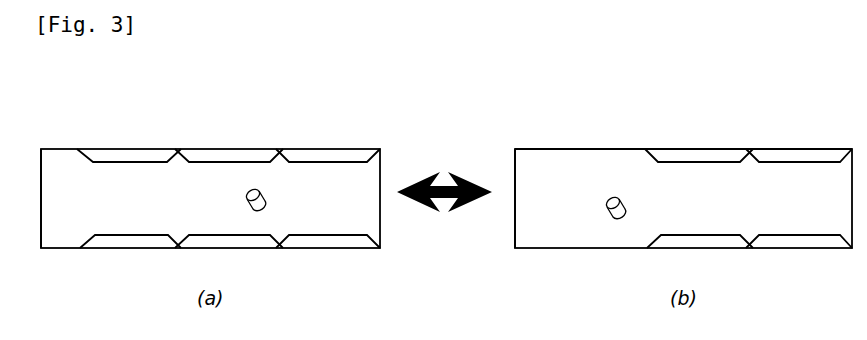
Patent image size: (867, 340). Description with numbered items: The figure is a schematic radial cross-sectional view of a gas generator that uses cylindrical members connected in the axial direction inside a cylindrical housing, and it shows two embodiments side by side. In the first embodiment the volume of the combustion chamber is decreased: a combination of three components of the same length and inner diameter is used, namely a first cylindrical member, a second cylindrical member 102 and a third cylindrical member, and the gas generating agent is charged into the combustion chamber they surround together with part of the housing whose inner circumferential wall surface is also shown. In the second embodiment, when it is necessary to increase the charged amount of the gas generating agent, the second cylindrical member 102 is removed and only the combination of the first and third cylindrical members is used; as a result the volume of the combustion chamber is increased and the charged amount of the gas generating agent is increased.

The second cylindrical member 102 is at (203, 165).